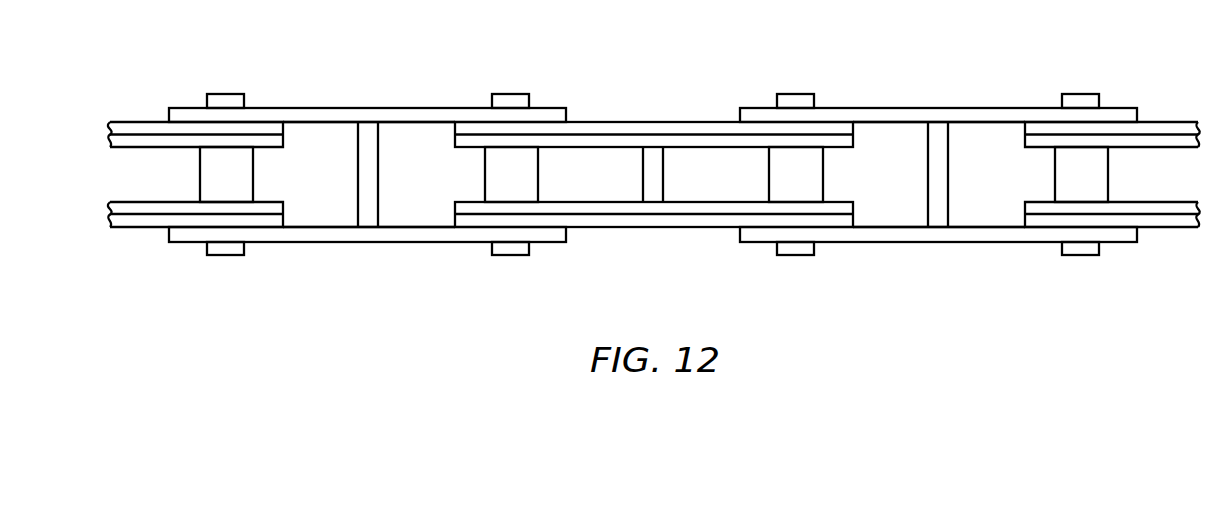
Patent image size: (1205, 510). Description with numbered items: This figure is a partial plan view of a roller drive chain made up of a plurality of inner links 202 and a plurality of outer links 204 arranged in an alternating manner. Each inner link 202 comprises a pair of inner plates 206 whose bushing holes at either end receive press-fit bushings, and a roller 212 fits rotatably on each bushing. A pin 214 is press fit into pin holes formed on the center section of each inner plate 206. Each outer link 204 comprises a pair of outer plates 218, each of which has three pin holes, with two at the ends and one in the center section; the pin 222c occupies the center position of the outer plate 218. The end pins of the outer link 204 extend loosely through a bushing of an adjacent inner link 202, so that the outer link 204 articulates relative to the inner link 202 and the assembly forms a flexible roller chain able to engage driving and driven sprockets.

The inner link 202 is at (847, 257).
The outer link 204 is at (563, 285).
The inner plate 206 is at (645, 122).
The roller 212 is at (243, 185).
The pin 214 is at (665, 158).
The outer plate 218 is at (347, 108).
The pin 222c is at (380, 158).